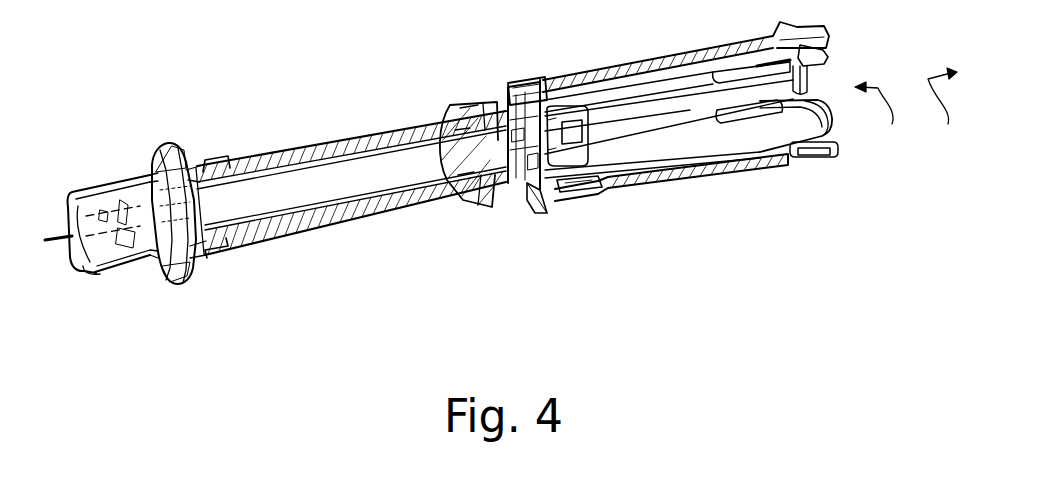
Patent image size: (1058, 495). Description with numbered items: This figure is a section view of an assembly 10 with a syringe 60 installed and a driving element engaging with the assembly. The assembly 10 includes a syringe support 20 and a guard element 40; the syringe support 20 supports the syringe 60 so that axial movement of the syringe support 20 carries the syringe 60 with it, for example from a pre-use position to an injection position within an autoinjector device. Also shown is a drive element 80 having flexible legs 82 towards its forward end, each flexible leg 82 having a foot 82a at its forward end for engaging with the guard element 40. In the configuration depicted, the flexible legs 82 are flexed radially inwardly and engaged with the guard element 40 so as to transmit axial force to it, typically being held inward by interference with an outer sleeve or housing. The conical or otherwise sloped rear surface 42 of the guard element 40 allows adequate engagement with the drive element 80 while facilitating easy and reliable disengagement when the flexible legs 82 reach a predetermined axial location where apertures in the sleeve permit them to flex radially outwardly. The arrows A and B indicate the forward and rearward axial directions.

The assembly 10 is at (501, 178).
The syringe support 20 is at (304, 145).
The guard element 40 is at (578, 198).
The sloped rear surface 42 is at (550, 83).
The syringe 60 is at (428, 199).
The drive element 80 is at (678, 193).
The flexible legs 82 is at (600, 190).
The foot 82a is at (553, 210).